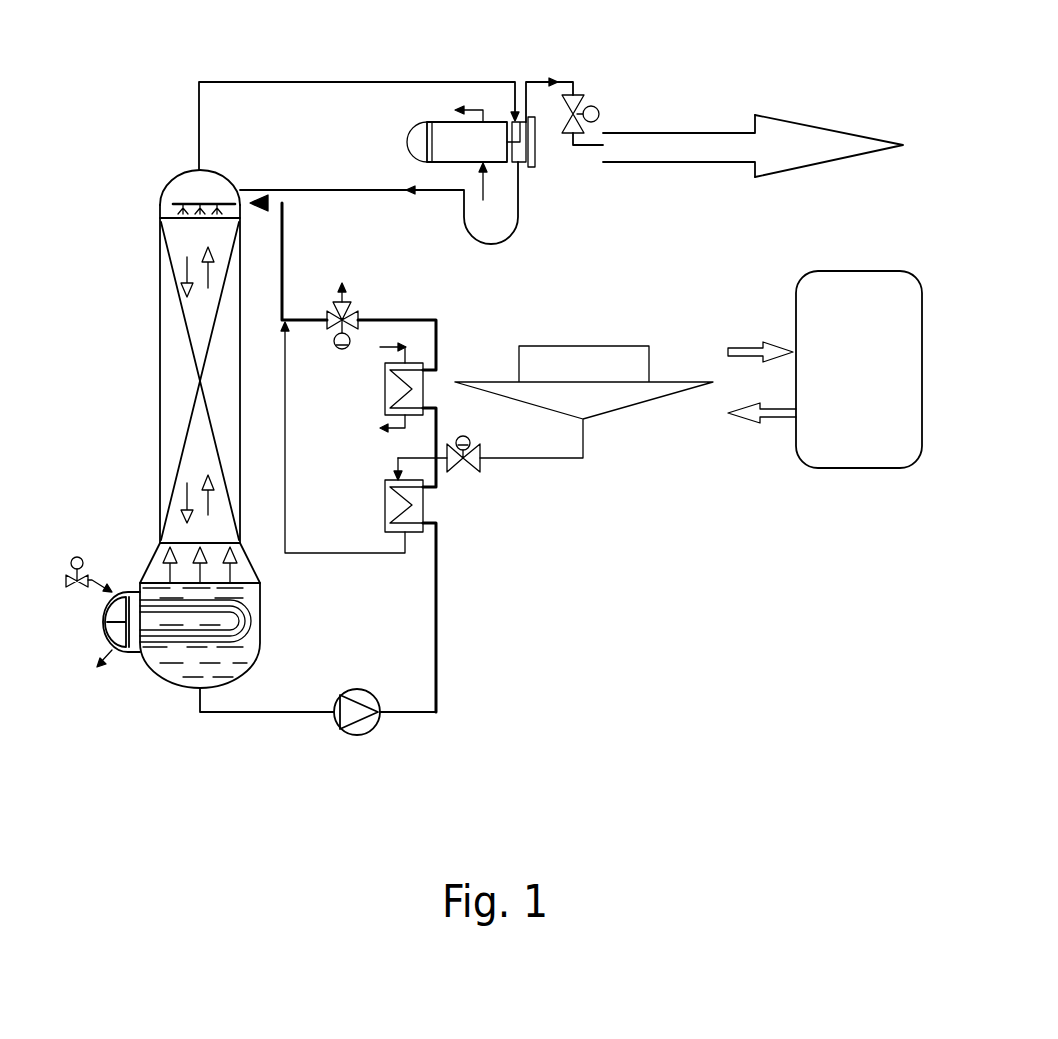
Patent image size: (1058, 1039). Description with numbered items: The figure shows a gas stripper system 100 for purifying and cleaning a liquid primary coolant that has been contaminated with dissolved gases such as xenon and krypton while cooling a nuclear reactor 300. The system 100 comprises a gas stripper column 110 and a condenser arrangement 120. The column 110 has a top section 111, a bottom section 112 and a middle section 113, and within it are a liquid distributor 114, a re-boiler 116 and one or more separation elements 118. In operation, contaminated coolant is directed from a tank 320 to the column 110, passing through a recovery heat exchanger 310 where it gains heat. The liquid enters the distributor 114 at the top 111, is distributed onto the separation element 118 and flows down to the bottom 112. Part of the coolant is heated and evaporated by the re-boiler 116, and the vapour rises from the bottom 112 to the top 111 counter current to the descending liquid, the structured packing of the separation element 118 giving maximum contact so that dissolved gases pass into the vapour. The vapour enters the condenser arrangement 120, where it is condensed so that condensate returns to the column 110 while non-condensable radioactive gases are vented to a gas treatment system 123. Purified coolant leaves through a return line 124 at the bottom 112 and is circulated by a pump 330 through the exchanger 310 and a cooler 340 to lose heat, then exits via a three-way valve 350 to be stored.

The gas stripper system 100 is at (776, 106).
The gas stripper column 110 is at (282, 428).
The top section 111 is at (187, 170).
The bottom section 112 is at (155, 677).
The middle section 113 is at (152, 338).
The liquid distributor 114 is at (173, 204).
The re-boiler 116 is at (101, 622).
The separation element 118 is at (173, 382).
The condenser arrangement 120 is at (460, 73).
The gas treatment system 123 is at (852, 146).
The return line 124 is at (287, 715).
The nuclear reactor 300 is at (853, 270).
The recovery heat exchanger 310 is at (427, 503).
The tank 320 is at (640, 403).
The pump 330 is at (358, 735).
The cooler 340 is at (380, 388).
The three-way valve 350 is at (350, 303).